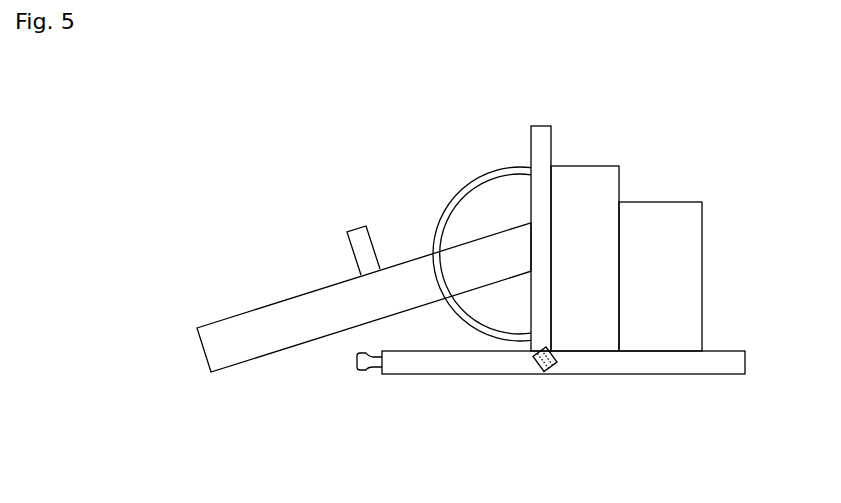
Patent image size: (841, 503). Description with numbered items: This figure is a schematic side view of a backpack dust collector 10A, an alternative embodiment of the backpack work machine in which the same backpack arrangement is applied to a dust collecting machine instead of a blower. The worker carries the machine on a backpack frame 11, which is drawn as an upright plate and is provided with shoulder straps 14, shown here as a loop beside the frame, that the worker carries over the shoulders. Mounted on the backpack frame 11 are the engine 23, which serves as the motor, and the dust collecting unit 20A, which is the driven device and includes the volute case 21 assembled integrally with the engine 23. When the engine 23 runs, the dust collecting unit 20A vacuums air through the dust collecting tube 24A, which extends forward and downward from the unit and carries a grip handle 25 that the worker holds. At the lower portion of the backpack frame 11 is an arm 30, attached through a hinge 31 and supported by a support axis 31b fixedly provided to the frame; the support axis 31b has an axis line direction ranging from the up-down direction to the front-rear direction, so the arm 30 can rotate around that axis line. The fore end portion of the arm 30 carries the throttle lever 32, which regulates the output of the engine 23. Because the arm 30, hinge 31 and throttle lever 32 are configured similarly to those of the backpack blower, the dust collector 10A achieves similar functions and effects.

The backpack dust collector 10A is at (633, 88).
The backpack frame 11 is at (538, 152).
The shoulder straps 14 is at (462, 188).
The dust collecting unit 20A is at (647, 152).
The volute case 21 is at (593, 180).
The engine 23 is at (683, 213).
The dust collecting tube 24A is at (303, 305).
The grip handle 25 is at (358, 247).
The arm 30 is at (455, 363).
The hinge 31 is at (553, 367).
The support axis 31b is at (533, 370).
The throttle lever 32 is at (372, 373).